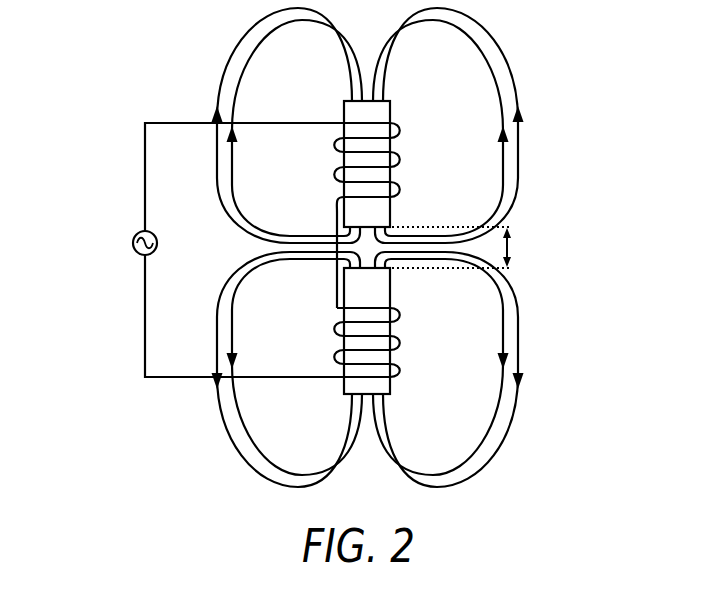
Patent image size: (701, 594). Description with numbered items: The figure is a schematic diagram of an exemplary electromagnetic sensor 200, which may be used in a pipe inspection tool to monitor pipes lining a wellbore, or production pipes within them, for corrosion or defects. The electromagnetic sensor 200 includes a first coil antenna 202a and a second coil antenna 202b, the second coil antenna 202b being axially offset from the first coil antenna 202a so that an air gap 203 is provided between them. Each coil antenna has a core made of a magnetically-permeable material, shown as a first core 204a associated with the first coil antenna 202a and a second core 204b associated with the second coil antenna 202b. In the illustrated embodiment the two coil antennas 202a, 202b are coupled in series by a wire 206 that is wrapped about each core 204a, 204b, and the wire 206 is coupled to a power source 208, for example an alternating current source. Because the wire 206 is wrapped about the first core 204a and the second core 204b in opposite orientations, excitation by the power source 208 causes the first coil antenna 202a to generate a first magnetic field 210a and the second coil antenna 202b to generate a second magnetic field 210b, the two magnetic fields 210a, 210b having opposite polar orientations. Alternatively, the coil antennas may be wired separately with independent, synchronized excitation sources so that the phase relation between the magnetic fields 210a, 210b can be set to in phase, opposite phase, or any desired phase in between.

The electromagnetic sensor 200 is at (126, 83).
The first coil antenna 202a is at (404, 118).
The second coil antenna 202b is at (414, 336).
The first core 204a is at (390, 212).
The second core 204b is at (390, 381).
The air gap 203 is at (512, 243).
The wire 206 is at (336, 276).
The power source 208 is at (158, 243).
The first magnetic field 210a is at (522, 102).
The second magnetic field 210b is at (522, 387).